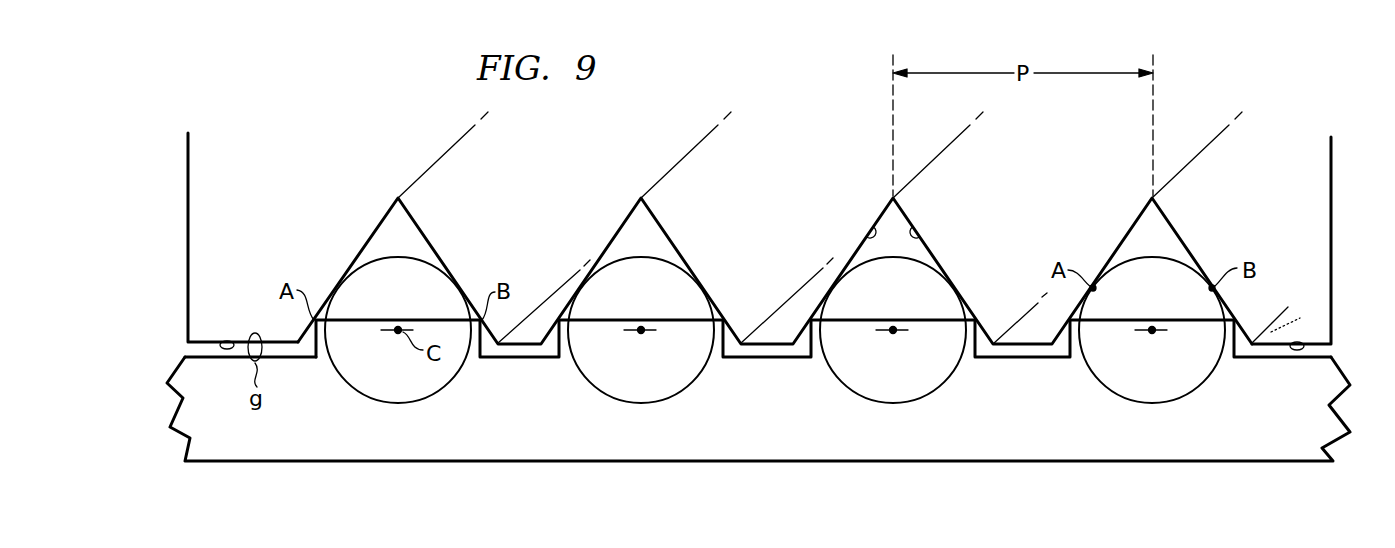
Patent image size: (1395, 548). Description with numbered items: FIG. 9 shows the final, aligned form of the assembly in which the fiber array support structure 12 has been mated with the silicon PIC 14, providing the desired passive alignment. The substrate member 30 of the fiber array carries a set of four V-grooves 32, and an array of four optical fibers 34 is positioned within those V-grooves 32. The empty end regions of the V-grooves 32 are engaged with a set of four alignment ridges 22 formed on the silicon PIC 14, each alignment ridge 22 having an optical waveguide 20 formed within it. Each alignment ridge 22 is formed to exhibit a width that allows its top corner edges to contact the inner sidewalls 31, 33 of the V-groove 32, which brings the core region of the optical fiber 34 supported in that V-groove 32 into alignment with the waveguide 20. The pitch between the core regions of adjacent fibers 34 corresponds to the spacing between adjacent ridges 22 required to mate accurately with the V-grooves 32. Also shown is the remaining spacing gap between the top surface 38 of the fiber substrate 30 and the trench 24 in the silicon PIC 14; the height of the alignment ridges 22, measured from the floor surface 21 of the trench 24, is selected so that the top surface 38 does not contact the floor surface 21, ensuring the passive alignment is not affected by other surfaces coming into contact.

The fiber array support structure 12 is at (1280, 112).
The silicon PIC 14 is at (212, 428).
The optical waveguide 20 is at (395, 334).
The floor surface 21 is at (190, 353).
The alignment ridge 22 is at (730, 337).
The trench 24 is at (218, 358).
The substrate member 30 is at (262, 152).
The inner sidewall 31 is at (865, 237).
The V-groove 32 is at (398, 198).
The inner sidewall 33 is at (922, 235).
The optical fiber 34 is at (347, 368).
The top surface 38 is at (233, 339).